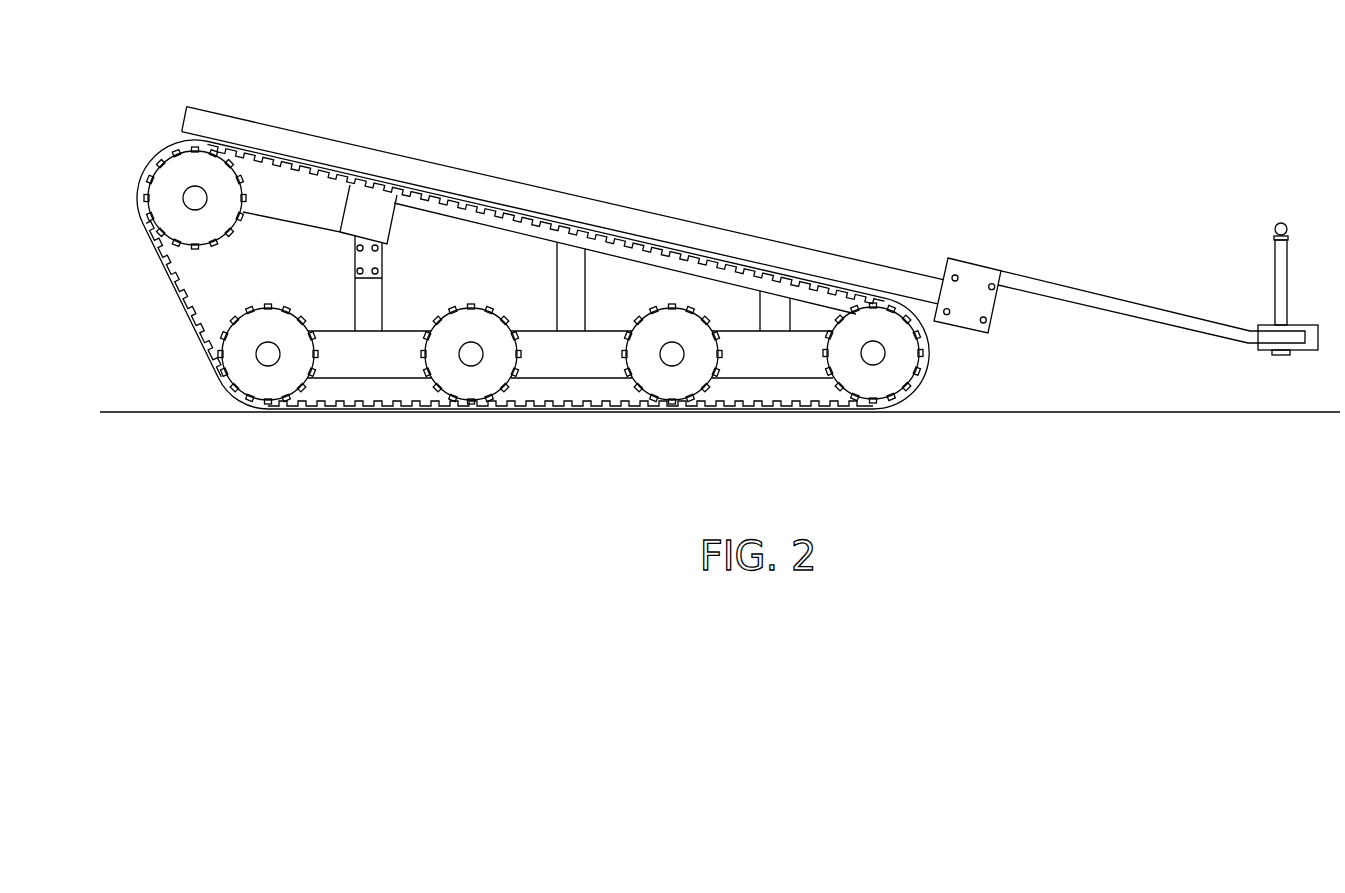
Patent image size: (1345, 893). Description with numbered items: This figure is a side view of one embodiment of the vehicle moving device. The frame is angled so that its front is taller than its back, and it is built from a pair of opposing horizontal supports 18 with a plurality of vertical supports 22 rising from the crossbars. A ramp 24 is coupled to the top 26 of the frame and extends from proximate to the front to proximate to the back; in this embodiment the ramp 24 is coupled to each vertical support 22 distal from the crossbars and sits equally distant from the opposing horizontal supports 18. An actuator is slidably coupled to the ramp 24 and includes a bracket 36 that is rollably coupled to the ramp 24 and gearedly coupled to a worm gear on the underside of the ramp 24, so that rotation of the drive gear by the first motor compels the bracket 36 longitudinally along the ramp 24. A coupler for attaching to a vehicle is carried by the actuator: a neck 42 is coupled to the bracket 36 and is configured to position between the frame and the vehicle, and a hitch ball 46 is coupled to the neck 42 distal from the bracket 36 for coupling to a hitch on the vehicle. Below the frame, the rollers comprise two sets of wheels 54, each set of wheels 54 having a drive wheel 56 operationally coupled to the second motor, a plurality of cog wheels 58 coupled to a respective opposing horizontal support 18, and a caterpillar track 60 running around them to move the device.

The horizontal supports 18 is at (364, 357).
The vertical supports 22 is at (373, 298).
The ramp 24 is at (432, 168).
The top 26 is at (558, 242).
The bracket 36 is at (967, 292).
The neck 42 is at (1148, 305).
The hitch ball 46 is at (1283, 265).
The set of wheels 54 is at (206, 228).
The drive wheel 56 is at (172, 178).
The cog wheels 58 is at (900, 376).
The caterpillar track 60 is at (173, 283).